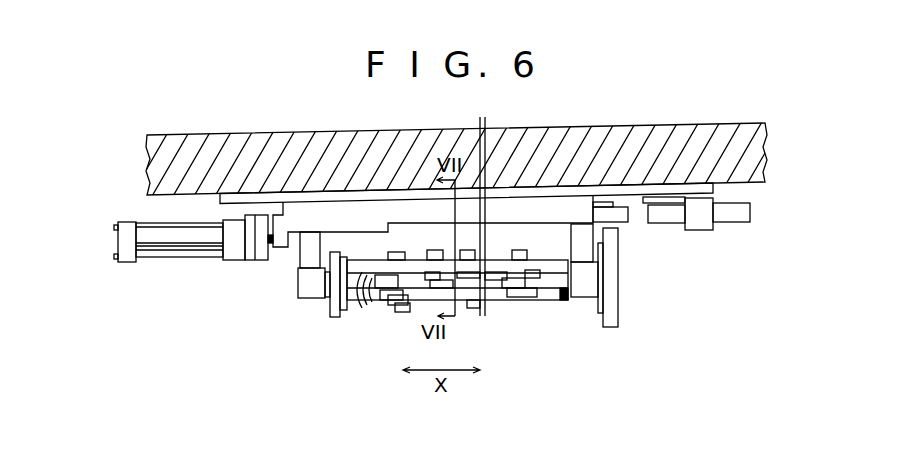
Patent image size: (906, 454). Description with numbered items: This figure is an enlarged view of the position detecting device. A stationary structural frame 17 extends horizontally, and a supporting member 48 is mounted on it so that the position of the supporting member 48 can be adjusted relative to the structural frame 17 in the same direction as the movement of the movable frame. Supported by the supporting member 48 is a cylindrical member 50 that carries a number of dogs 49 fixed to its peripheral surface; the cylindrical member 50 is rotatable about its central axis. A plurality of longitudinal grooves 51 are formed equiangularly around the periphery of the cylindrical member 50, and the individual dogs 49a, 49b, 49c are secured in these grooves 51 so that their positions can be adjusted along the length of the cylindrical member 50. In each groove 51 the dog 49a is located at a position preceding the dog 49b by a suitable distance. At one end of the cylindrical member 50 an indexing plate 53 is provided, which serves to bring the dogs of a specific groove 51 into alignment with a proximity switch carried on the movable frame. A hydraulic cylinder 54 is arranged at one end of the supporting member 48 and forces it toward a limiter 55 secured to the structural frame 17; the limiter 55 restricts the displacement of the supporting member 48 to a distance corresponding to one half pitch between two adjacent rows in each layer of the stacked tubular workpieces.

The structural frame 17 is at (547, 131).
The supporting member 48 is at (395, 224).
The dogs 49 is at (393, 304).
The dog 49a is at (537, 282).
The dog 49b is at (488, 272).
The dog 49c is at (478, 280).
The cylindrical member 50 is at (561, 306).
The longitudinal grooves 51 is at (363, 298).
The indexing plate 53 is at (617, 300).
The hydraulic cylinder 54 is at (180, 248).
The limiter 55 is at (660, 223).